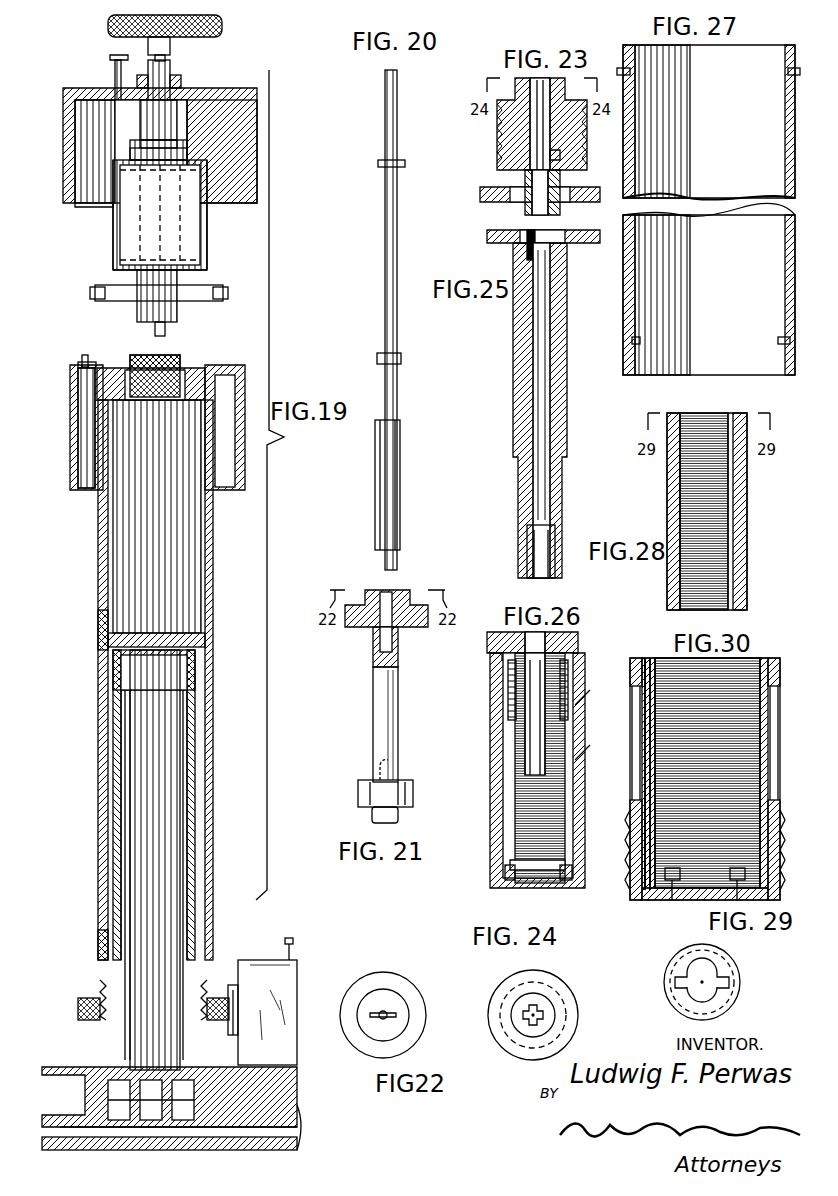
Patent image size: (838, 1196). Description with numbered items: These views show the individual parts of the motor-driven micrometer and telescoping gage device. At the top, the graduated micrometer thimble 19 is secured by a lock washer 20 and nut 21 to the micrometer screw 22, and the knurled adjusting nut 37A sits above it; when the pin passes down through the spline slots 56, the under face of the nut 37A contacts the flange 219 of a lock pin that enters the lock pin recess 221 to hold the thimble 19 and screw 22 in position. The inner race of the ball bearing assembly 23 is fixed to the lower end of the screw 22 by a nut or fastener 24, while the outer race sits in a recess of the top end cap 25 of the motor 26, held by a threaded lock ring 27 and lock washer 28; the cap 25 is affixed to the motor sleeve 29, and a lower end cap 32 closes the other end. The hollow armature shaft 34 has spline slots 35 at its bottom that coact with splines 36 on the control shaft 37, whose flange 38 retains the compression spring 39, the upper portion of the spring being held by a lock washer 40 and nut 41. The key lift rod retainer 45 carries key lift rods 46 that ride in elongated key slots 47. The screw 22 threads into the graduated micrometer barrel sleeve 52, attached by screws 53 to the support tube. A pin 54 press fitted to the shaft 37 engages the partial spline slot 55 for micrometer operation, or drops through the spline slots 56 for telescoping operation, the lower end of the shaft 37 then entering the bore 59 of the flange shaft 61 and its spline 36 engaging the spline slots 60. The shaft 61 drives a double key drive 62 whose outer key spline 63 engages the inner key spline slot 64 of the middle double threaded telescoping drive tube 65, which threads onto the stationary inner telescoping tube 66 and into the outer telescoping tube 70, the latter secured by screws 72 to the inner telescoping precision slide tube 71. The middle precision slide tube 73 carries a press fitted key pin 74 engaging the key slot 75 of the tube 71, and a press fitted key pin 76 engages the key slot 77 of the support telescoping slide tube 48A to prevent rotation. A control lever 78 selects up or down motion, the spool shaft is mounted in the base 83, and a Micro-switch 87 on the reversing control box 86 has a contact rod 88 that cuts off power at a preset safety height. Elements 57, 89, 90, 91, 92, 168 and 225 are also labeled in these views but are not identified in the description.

In FIG. 19, the graduated micrometer thimble 19 is at (258, 162).
In FIG. 19, the lock washer 20 is at (175, 95).
In FIG. 19, the nut 21 is at (183, 80).
In FIG. 19, the micrometer screw 22 is at (178, 110).
In FIG. 19, the ball bearing assembly 23 is at (62, 160).
In FIG. 23, the ball bearing assembly 23 is at (480, 195).
In FIG. 23, the nut or fastener 24 is at (510, 210).
In FIG. 19, the top end cap 25 is at (188, 158).
In FIG. 19, the motor 26 is at (208, 230).
In FIG. 19, the threaded lock ring 27 is at (178, 143).
In FIG. 19, the lock washer 28 is at (188, 152).
In FIG. 19, the motor sleeve 29 is at (113, 240).
In FIG. 19, the lower end cap 32 is at (207, 268).
In FIG. 19, the hollow armature shaft 34 is at (170, 210).
In FIG. 25, the spline slots 35 is at (527, 550).
In FIG. 20, the splines 36 is at (378, 463).
In FIG. 19, the control shaft 37 is at (155, 330).
In FIG. 20, the control shaft 37 is at (395, 150).
In FIG. 19, the knurled adjusting nut 37A is at (222, 26).
In FIG. 20, the flange 38 is at (400, 357).
In FIG. 25, the compression spring 39 is at (513, 360).
In FIG. 25, the lock washer 40 is at (525, 245).
In FIG. 25, the nut 41 is at (487, 237).
In FIG. 19, the key lift rod retainer 45 is at (130, 290).
In FIG. 19, the key lift rods 46 is at (100, 300).
In FIG. 19, the key slots 47 is at (105, 512).
In FIG. 19, the precision elongated support telescoping slide tube 48A is at (98, 635).
In FIG. 19, the graduated micrometer barrel sleeve 52 is at (70, 438).
In FIG. 23, the screws 53 is at (560, 158).
In FIG. 20, the pin 54 is at (405, 163).
In FIG. 23, the partial spline slot 55 is at (497, 135).
In FIG. 24, the partial spline slot 55 is at (525, 1008).
In FIG. 24, the spline slots 56 is at (538, 1010).
In FIG. 19, the lock nut 57 is at (78, 1010).
In FIG. 21, the bore 59 is at (380, 640).
In FIG. 22, the bore 59 is at (388, 1012).
In FIG. 21, the spline slots 60 is at (395, 605).
In FIG. 22, the spline slots 60 is at (383, 1013).
In FIG. 21, the flange shaft 61 is at (385, 700).
In FIG. 22, the flange shaft 61 is at (348, 1043).
In FIG. 21, the double key drive 62 is at (375, 780).
In FIG. 21, the outer key spline 63 is at (355, 793).
In FIG. 28, the inner key spline slot 64 is at (670, 585).
In FIG. 29, the inner key spline slot 64 is at (729, 982).
In FIG. 28, the middle double threaded telescoping drive tube 65 is at (747, 590).
In FIG. 29, the middle double threaded telescoping drive tube 65 is at (680, 1012).
In FIG. 26, the stationary inner telescoping tube 66 is at (548, 668).
In FIG. 19, the outer telescoping tube 70 is at (145, 970).
In FIG. 26, the outer telescoping tube 70 is at (570, 730).
In FIG. 30, the outer telescoping tube 70 is at (665, 723).
In FIG. 19, the inner telescoping precision slide tube 71 is at (113, 678).
In FIG. 30, the inner telescoping precision slide tube 71 is at (775, 668).
In FIG. 30, the screws 72 is at (672, 905).
In FIG. 27, the middle precision slide tube 73 is at (775, 150).
In FIG. 27, the key pin 74 is at (790, 340).
In FIG. 19, the key slot 75 is at (118, 893).
In FIG. 26, the key slot 75 is at (585, 790).
In FIG. 30, the key slot 75 is at (777, 735).
In FIG. 27, the key pin 76 is at (800, 70).
In FIG. 19, the key slot 77 is at (213, 730).
In FIG. 19, the control lever 78 is at (295, 940).
In FIG. 19, the base 83 is at (297, 1090).
In FIG. 19, the reversing control box 86 is at (297, 1000).
In FIG. 19, the Micro-switch 87 is at (234, 1030).
In FIG. 19, the contact rod 88 is at (238, 1000).
In FIG. 19, the clip 89 is at (80, 370).
In FIG. 19, the pin 90 is at (82, 358).
In FIG. 19, the spring 91 is at (80, 402).
In FIG. 19, the housing 92 is at (75, 203).
In FIG. 19, the partition 168 is at (180, 640).
In FIG. 19, the flange 219 is at (118, 56).
In FIG. 19, the lock pin recess 221 is at (118, 368).
In FIG. 19, the screw 225 is at (112, 70).